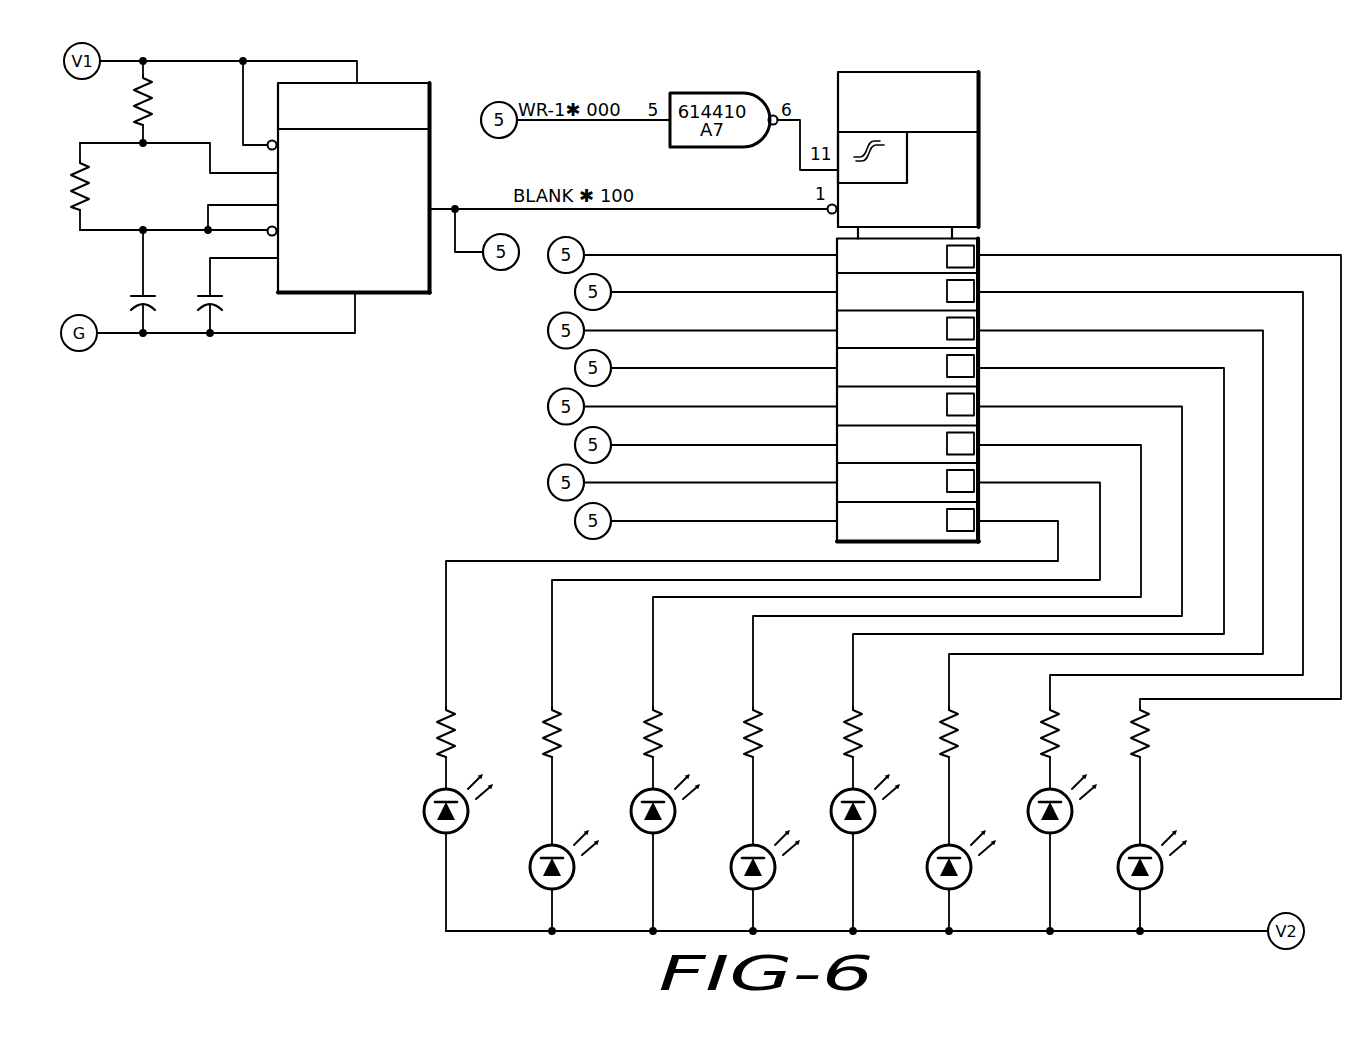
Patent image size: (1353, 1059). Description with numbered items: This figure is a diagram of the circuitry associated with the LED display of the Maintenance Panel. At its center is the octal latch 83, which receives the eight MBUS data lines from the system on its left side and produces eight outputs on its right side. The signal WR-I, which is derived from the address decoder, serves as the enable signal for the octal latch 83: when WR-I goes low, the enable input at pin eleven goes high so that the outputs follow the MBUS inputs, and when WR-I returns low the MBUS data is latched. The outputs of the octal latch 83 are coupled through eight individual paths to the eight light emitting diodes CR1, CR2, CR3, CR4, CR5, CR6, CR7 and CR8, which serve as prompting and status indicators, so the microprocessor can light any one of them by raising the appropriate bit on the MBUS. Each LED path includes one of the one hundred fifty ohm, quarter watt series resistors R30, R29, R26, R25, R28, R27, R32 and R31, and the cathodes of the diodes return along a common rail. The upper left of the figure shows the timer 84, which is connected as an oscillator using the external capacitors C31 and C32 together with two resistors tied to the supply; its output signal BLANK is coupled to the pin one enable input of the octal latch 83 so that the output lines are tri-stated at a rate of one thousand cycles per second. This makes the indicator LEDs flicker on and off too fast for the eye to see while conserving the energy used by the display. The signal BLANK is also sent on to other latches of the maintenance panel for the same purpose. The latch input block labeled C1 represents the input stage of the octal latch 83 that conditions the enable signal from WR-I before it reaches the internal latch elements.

The octal latch 83 is at (893, 378).
The timer 84 is at (430, 94).
The hysteresis (Schmitt) input stage of register C1 is at (907, 160).
The timing capacitor .1uf C31 is at (121, 289).
The control voltage capacitor .01uf C32 is at (231, 293).
The 150 ohm current limiting resistor R25 is at (783, 736).
The 150 ohm current limiting resistor R26 is at (683, 736).
The 150 ohm current limiting resistor R27 is at (979, 736).
The 150 ohm current limiting resistor R28 is at (883, 736).
The 150 ohm current limiting resistor R29 is at (582, 736).
The 150 ohm current limiting resistor R30 is at (476, 736).
The 150 ohm current limiting resistor R31 is at (1170, 736).
The 150 ohm current limiting resistor R32 is at (1080, 736).
The light emitting diode CR1 is at (468, 803).
The light emitting diode CR2 is at (574, 859).
The light emitting diode CR3 is at (675, 803).
The light emitting diode CR4 is at (775, 859).
The light emitting diode CR5 is at (875, 803).
The light emitting diode CR6 is at (971, 859).
The light emitting diode CR7 is at (1072, 803).
The light emitting diode CR8 is at (1162, 859).